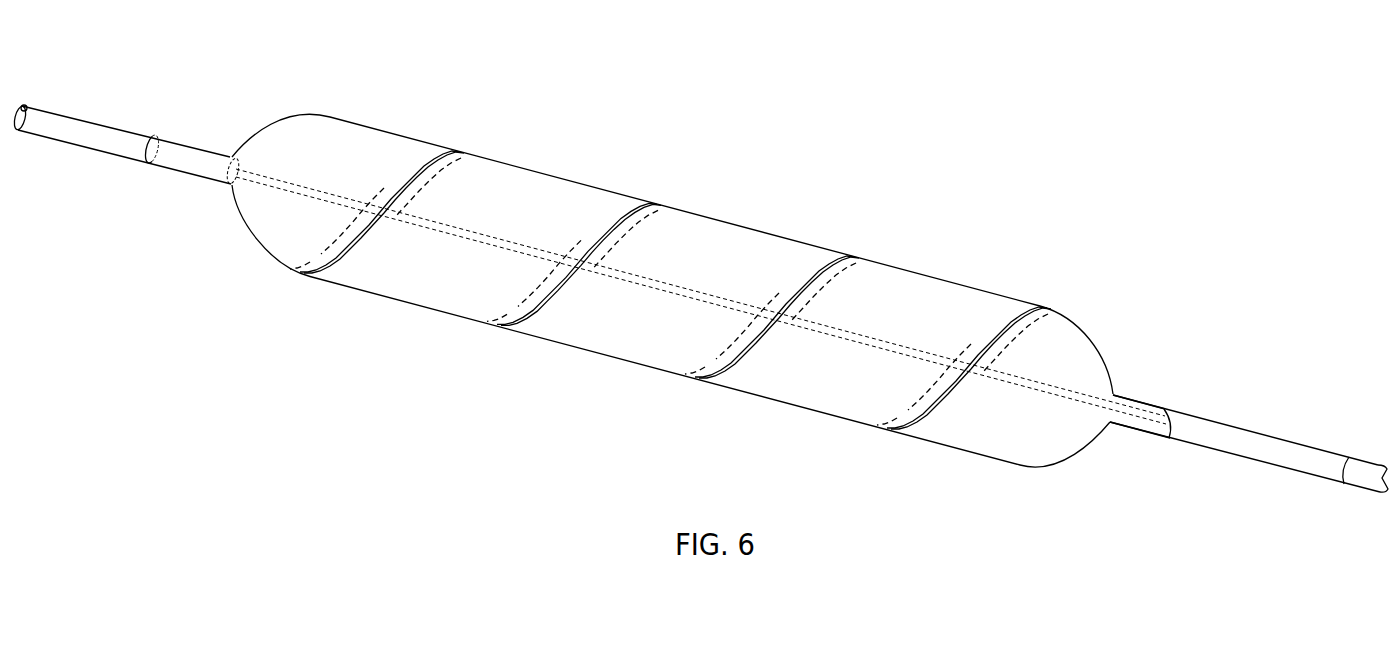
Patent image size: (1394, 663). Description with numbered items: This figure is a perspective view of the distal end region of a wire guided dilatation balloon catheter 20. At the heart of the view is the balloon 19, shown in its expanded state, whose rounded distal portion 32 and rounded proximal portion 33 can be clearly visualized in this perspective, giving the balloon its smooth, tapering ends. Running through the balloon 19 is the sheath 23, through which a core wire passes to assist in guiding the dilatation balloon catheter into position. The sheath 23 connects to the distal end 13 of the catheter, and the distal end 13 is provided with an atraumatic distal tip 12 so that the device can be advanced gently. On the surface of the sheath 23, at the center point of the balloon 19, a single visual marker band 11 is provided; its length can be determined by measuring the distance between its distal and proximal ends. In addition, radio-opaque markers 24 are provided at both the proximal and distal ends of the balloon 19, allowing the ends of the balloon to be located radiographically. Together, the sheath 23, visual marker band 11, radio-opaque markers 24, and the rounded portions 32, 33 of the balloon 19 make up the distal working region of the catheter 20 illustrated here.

The visual marker band 11 is at (640, 283).
The atraumatic distal tip 12 is at (29, 106).
The distal end 13 is at (83, 130).
The balloon 19 is at (375, 127).
The wire guided dilatation balloon catheter 20 is at (852, 77).
The sheath 23 is at (423, 218).
The radio-opaque markers 24 is at (147, 142).
The rounded distal portion 32 is at (230, 157).
The rounded proximal portion 33 is at (1113, 393).